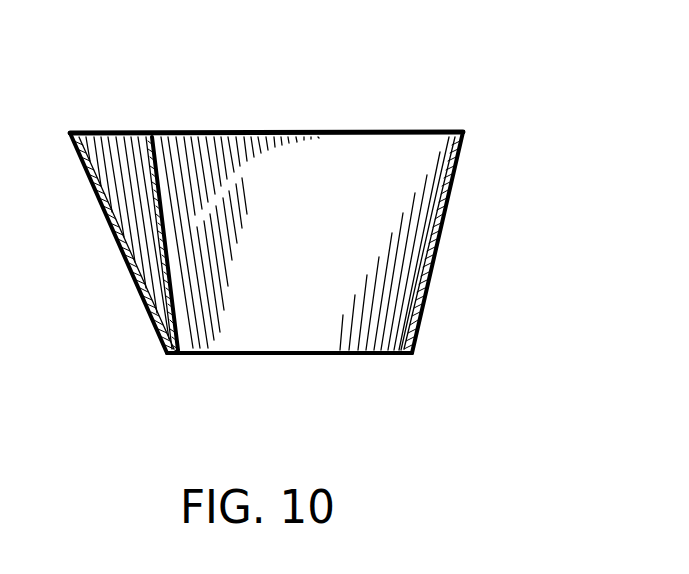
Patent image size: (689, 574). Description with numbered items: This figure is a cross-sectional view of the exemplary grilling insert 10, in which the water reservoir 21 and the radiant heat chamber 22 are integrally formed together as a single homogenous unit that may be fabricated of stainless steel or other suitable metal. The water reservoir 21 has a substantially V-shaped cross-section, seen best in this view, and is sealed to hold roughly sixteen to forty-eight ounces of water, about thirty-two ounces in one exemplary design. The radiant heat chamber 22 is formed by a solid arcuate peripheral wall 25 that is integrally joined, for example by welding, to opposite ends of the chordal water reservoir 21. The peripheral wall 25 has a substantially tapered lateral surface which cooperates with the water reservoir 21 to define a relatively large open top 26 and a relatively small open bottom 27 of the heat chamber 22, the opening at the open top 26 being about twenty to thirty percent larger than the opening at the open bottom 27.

The grilling insert 10 is at (536, 107).
The water reservoir 21 is at (90, 150).
The radiant heat chamber 22 is at (445, 178).
The peripheral wall 25 is at (443, 233).
The open top 26 is at (157, 165).
The open bottom 27 is at (183, 349).